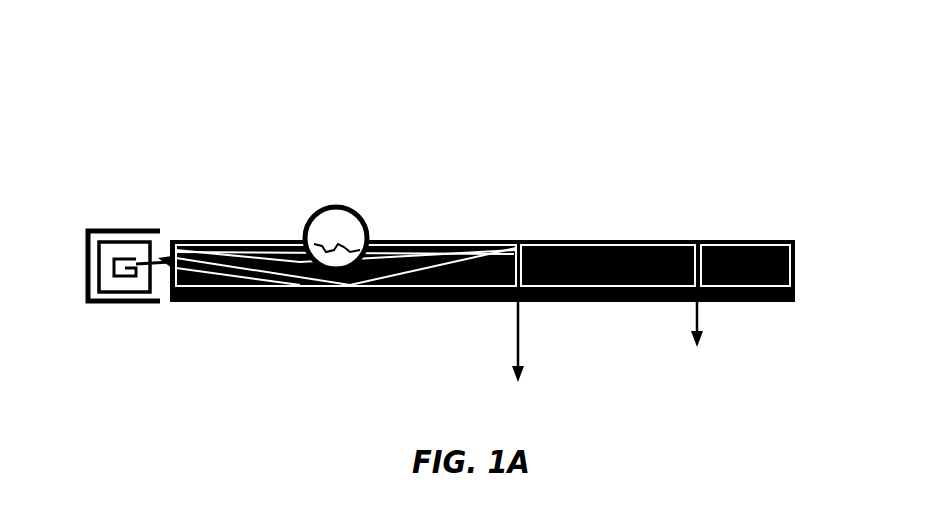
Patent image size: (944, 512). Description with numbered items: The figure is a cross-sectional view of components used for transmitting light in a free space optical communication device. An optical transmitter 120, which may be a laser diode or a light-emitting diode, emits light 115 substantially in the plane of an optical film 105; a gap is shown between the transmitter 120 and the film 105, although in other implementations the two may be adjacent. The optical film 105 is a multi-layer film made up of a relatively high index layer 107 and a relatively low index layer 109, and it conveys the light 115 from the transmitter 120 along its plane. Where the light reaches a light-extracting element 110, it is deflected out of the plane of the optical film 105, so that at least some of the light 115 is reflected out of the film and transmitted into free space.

The optical film 105 is at (611, 209).
The high index layer 107 is at (778, 250).
The low index layer 109 is at (793, 300).
The light-extracting element 110 is at (351, 366).
The light 115 is at (161, 249).
The optical transmitter 120 is at (132, 231).